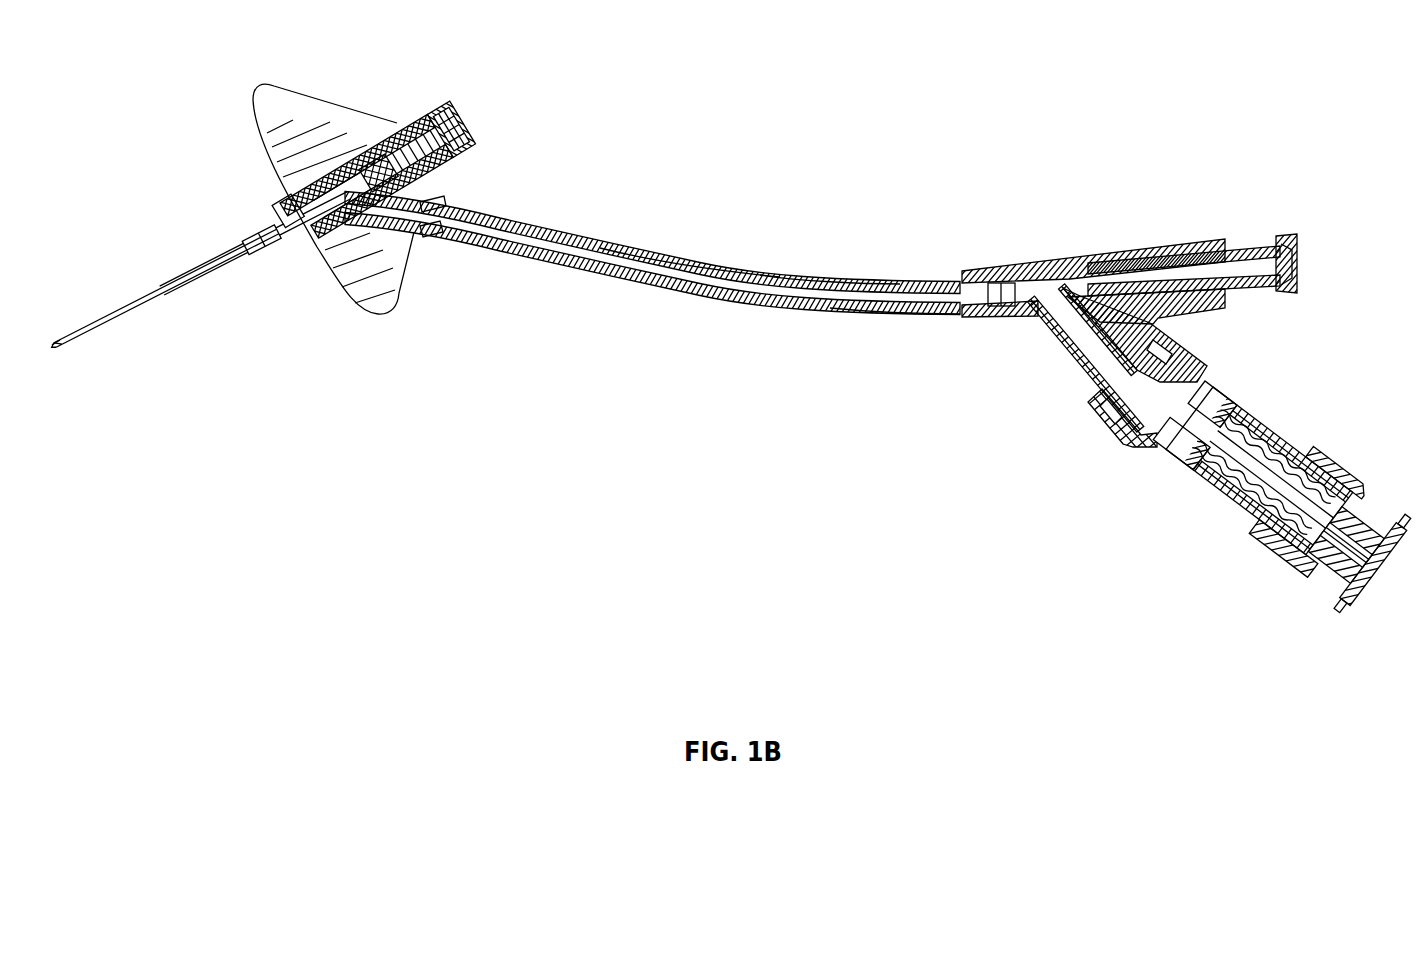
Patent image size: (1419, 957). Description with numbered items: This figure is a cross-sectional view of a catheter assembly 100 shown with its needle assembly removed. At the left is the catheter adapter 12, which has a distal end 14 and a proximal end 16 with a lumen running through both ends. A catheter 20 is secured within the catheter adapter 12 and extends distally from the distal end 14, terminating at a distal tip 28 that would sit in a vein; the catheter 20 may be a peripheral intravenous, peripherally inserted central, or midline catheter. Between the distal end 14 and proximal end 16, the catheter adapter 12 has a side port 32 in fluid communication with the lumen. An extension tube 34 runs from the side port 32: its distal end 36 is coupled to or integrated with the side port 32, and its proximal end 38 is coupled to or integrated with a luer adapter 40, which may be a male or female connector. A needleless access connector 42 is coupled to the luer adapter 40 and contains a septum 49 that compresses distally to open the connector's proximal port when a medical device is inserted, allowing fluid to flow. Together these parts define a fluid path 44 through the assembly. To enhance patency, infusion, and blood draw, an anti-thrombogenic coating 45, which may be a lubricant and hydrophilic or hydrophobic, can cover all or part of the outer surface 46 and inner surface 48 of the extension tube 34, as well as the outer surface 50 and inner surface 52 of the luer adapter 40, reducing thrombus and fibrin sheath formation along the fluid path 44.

The catheter system 100 is at (540, 152).
The catheter adapter 12 is at (405, 122).
The distal end 14 is at (254, 256).
The proximal end 16 is at (456, 104).
The catheter 20 is at (153, 300).
The distal tip 28 is at (62, 334).
The side port 32 is at (428, 238).
The extension tube 34 is at (735, 299).
The distal end 36 is at (441, 194).
The proximal end 38 is at (1004, 278).
The luer adapter 40 is at (1093, 383).
The needleless access connector 42 is at (1259, 418).
The fluid path 44 is at (204, 263).
The anti-thrombogenic coating 45 is at (881, 315).
The outer surface 46 is at (816, 288).
The inner surface 48 is at (712, 274).
The septum 49 is at (1358, 505).
The outer surface 50 is at (1060, 356).
The inner surface 52 is at (1102, 312).